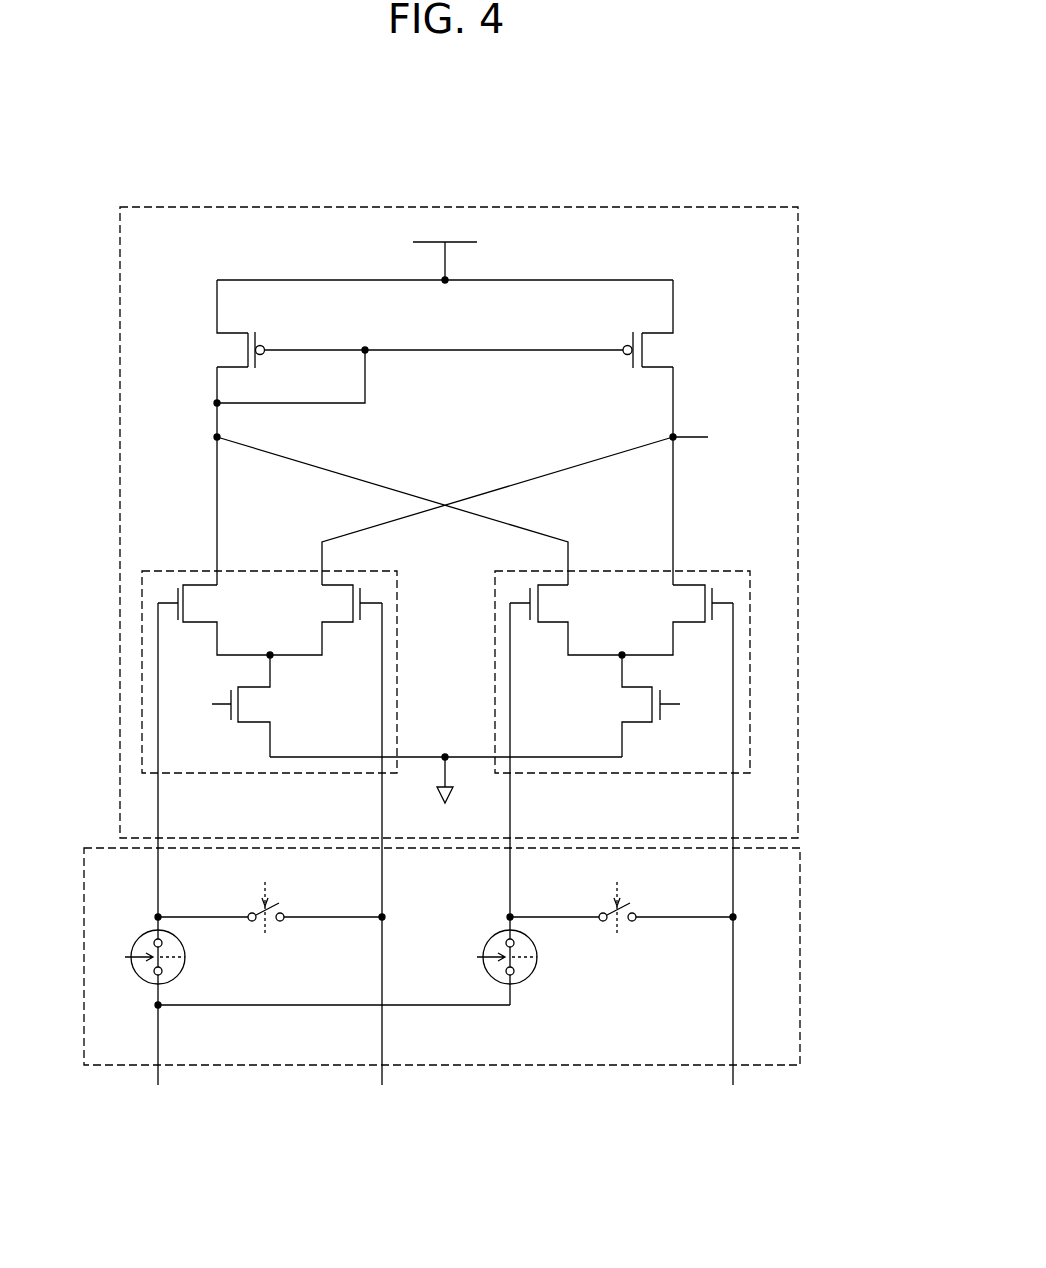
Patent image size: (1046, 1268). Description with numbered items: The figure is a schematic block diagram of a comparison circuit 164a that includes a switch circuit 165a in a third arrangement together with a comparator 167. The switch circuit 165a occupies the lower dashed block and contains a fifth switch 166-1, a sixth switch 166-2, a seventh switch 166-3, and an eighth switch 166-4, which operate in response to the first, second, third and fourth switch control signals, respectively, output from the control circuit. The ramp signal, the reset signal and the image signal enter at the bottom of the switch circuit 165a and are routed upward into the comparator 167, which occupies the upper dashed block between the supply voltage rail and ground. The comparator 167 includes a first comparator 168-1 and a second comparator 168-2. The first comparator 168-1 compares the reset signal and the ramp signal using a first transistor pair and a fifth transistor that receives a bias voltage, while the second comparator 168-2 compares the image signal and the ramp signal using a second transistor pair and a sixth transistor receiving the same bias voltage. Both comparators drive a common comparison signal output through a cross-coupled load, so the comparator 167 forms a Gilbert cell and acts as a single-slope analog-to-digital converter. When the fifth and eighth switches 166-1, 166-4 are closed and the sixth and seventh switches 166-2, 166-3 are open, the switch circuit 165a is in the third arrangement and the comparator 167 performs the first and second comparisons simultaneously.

The comparison circuit 164a is at (792, 133).
The comparator 167 is at (658, 207).
The first comparator 168-1 is at (183, 571).
The second comparator 168-2 is at (732, 554).
The switch circuit 165a is at (97, 848).
The fifth switch 166-1 is at (185, 955).
The sixth switch 166-2 is at (266, 910).
The seventh switch 166-3 is at (616, 910).
The eighth switch 166-4 is at (536, 955).